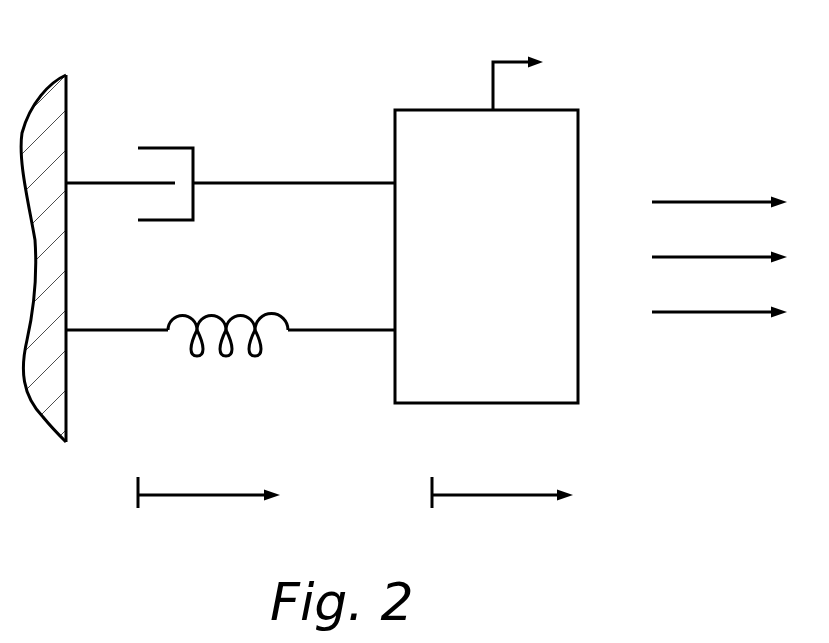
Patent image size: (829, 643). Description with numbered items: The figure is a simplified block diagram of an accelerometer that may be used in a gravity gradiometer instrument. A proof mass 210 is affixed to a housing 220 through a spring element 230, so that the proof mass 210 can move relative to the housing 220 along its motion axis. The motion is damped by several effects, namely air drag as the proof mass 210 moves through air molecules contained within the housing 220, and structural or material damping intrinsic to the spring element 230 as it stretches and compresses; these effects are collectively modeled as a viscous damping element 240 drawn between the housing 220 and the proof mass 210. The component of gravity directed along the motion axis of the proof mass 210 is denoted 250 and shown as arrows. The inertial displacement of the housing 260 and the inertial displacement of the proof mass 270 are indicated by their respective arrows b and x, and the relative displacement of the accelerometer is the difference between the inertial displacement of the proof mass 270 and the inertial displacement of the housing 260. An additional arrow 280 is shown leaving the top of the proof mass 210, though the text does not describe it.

The proof mass 210 is at (438, 108).
The housing 220 is at (68, 103).
The spring element 230 is at (216, 318).
The viscous damping element 240 is at (190, 146).
The component of gravity 250 is at (730, 200).
The inertial displacement of the housing 260 is at (238, 493).
The inertial displacement of the proof mass 270 is at (527, 493).
The output / sensor arrow 280 is at (511, 60).